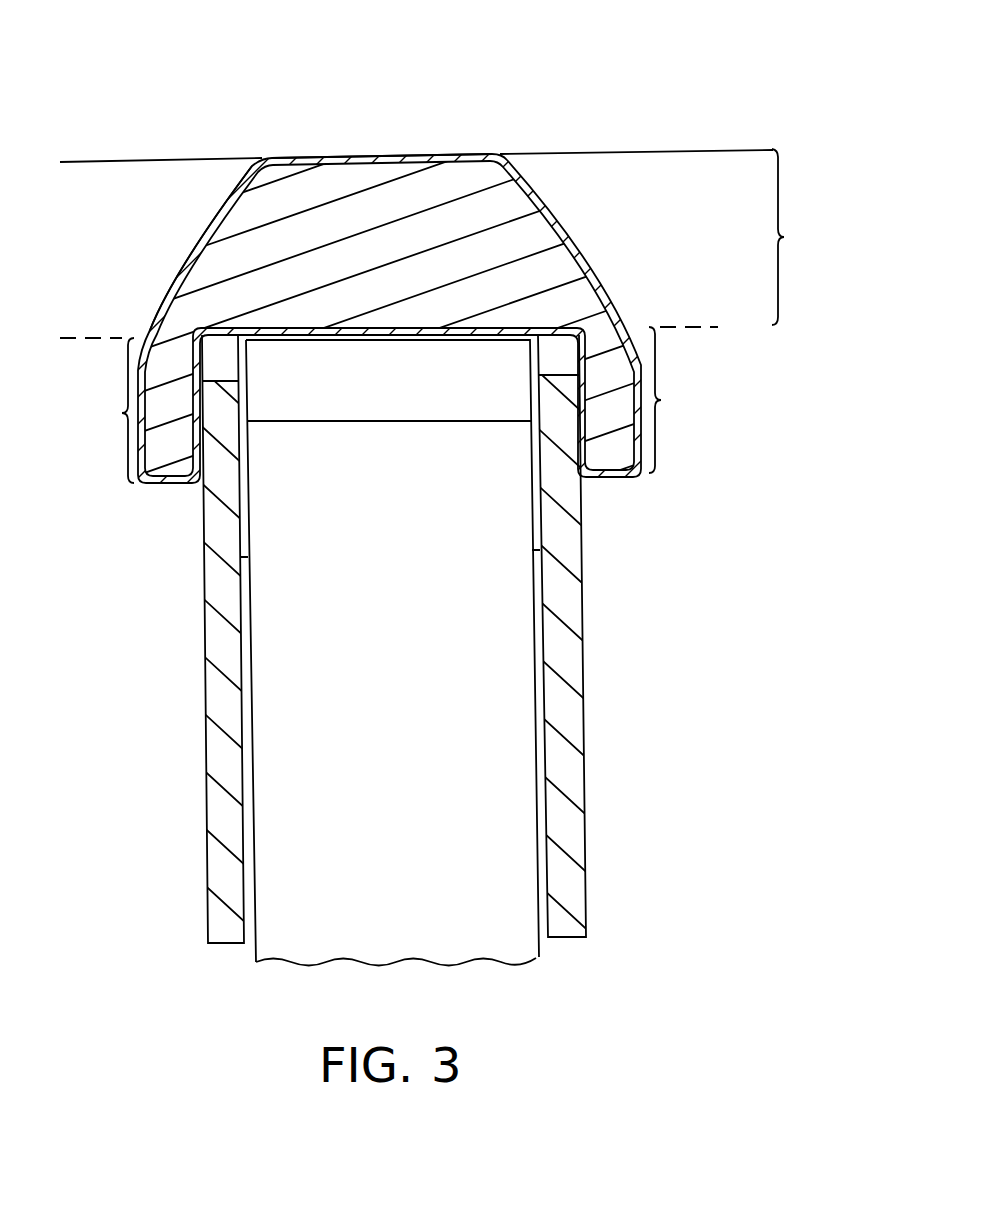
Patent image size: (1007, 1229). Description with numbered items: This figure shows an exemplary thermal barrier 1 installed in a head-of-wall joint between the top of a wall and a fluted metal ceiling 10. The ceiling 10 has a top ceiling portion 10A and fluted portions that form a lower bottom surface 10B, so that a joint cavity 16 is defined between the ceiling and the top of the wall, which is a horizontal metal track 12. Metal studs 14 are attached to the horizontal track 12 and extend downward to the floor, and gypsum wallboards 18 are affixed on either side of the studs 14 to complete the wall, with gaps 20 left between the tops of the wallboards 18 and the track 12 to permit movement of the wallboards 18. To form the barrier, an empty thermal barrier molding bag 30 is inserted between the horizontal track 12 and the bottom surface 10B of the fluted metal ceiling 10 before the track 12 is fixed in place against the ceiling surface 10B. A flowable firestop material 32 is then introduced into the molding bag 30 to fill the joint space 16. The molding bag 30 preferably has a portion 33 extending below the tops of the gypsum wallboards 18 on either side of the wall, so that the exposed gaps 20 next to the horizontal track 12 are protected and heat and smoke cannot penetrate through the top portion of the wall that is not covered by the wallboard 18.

The thermal barrier 1 is at (180, 262).
The fluted metal ceiling 10 is at (340, 128).
The top ceiling portion 10A is at (493, 152).
The fluted portion (bottom surface of ceiling) 10B is at (710, 327).
The horizontal metal track 12 is at (533, 388).
The metal studs 14 is at (398, 943).
The joint cavity 16 is at (804, 237).
The gypsum wallboards 18 is at (222, 815).
The gaps 20 is at (220, 362).
The thermal barrier molding bag 30 is at (558, 213).
The flowable firestop material 32 is at (543, 262).
The portion of molding bag 33 is at (388, 405).